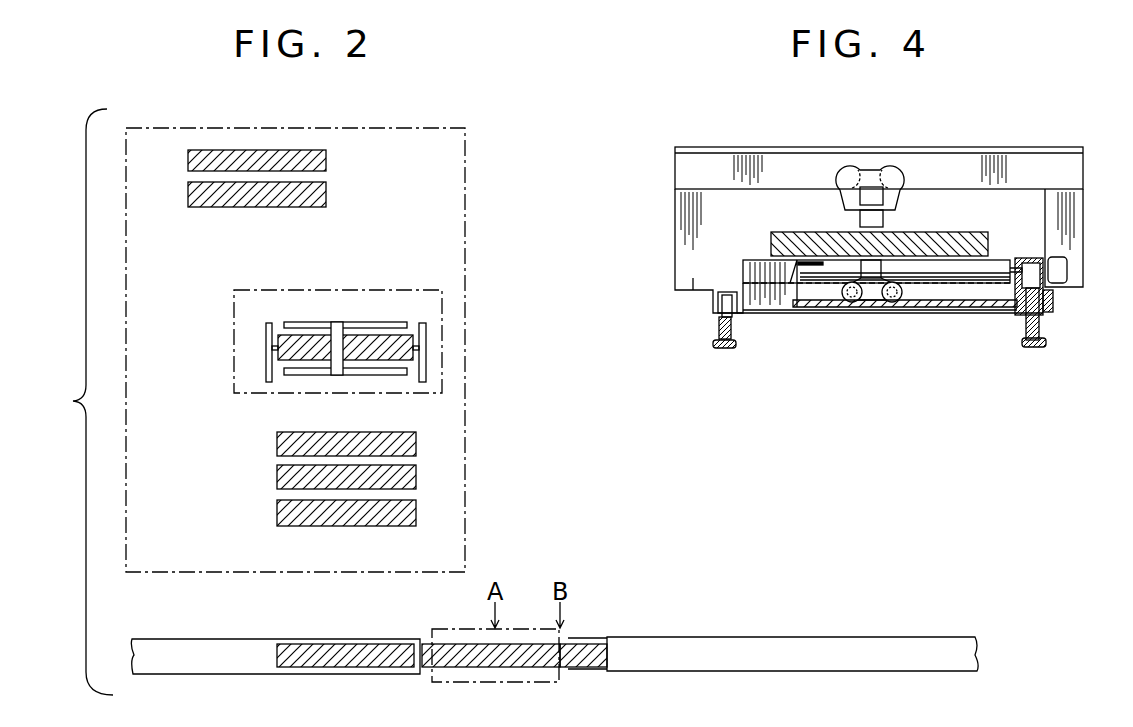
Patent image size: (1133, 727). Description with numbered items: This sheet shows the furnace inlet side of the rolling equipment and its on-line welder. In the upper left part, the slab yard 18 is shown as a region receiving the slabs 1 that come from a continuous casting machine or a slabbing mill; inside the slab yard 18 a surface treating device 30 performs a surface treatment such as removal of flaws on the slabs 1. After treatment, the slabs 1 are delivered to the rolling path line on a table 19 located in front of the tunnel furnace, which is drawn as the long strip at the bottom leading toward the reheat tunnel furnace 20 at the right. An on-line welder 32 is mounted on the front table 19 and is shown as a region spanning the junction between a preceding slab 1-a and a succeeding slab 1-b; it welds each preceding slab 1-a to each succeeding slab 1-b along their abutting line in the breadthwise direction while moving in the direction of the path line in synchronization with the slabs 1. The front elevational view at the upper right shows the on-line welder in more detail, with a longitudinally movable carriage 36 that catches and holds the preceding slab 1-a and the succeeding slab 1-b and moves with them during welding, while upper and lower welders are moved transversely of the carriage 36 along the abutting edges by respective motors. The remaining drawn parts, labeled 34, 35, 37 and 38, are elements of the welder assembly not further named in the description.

In FIG. 2, the slab 1 is at (303, 150).
In FIG. 2, the preceding slab 1-a is at (585, 645).
In FIG. 2, the succeeding slab 1-b is at (523, 644).
In FIG. 2, the slab yard 18 is at (467, 172).
In FIG. 2, the table 19 is at (221, 639).
In FIG. 2, the reheat tunnel furnace 20 is at (775, 637).
In FIG. 2, the surface treating device 30 is at (443, 327).
In FIG. 2, the on-line welder 32 is at (447, 629).
In FIG. 4, the foot pad 34 is at (738, 347).
In FIG. 4, the leveling screw 35 is at (718, 318).
In FIG. 4, the longitudinally movable carriage 36 is at (684, 291).
In FIG. 4, the roller 37 is at (871, 302).
In FIG. 4, the motor 38 is at (878, 172).